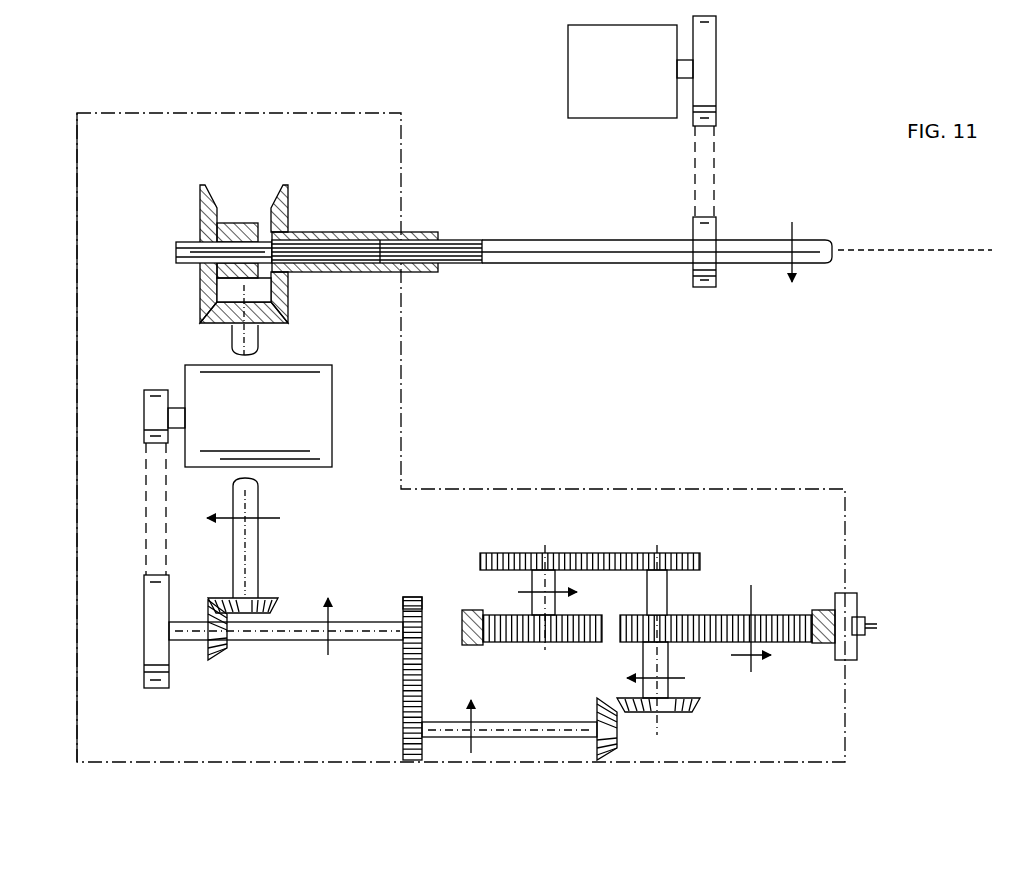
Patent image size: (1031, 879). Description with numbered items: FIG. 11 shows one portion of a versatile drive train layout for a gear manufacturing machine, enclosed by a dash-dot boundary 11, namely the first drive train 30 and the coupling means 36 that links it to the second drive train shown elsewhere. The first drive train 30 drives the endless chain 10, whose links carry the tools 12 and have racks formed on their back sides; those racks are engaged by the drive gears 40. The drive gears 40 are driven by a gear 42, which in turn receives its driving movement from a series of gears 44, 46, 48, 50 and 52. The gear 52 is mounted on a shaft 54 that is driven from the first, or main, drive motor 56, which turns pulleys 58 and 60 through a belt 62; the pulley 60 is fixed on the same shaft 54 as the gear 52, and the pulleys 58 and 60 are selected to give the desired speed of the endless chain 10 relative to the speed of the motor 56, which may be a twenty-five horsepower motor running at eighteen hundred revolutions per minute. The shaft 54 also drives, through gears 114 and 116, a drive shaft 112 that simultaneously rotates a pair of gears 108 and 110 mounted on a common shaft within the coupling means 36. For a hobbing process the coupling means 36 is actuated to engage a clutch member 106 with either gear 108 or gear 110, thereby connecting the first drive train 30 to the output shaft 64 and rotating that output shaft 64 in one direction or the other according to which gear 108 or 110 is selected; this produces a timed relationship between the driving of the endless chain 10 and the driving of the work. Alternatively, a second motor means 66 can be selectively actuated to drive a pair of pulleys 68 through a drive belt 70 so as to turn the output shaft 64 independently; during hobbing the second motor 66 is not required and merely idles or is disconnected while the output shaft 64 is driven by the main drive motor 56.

The endless chain 10 is at (465, 610).
The housing boundary 11 is at (401, 432).
The tools 12 is at (868, 622).
The first drive train 30 is at (125, 703).
The coupling means 36 is at (255, 248).
The drive gears 40 is at (530, 643).
The gear 42 is at (622, 640).
The gear 44 is at (697, 710).
The gear 46 is at (617, 737).
The gear 48 is at (422, 727).
The gear 50 is at (403, 680).
The gear 52 is at (403, 600).
The shaft 54 is at (294, 640).
The first drive motor 56 is at (250, 416).
The pulley 58 is at (144, 410).
The pulley 60 is at (144, 630).
The belt 62 is at (146, 520).
The output shaft 64 is at (603, 263).
The second motor means 66 is at (630, 71).
The pulleys 68 is at (716, 52).
The drive belt 70 is at (716, 165).
The clutch member 106 is at (237, 225).
The gear 108 is at (200, 205).
The gear 110 is at (289, 290).
The drive shaft 112 is at (258, 338).
The gear 114 is at (218, 655).
The gear 116 is at (270, 600).